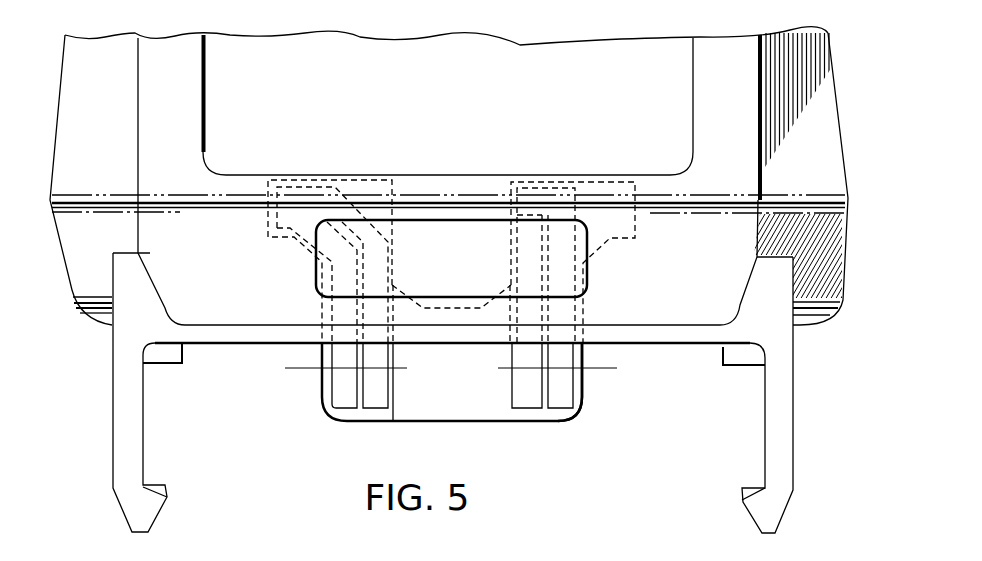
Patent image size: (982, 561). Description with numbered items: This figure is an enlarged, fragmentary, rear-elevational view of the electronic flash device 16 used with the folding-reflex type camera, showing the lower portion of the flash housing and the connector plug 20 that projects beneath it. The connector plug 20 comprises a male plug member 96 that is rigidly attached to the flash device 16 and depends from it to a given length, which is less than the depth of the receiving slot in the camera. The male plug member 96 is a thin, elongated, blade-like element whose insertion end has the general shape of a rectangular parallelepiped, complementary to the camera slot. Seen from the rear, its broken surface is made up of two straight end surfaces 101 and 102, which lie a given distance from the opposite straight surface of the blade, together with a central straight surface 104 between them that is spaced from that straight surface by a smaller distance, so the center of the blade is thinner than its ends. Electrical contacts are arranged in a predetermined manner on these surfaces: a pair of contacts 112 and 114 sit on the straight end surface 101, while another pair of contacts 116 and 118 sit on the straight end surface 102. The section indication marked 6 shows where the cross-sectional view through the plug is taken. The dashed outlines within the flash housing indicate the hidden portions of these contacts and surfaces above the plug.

The electronic flash device 16 is at (852, 135).
The connector plug 20 is at (589, 395).
The male plug member 96 is at (565, 418).
The straight end surface 101 is at (323, 353).
The straight end surface 102 is at (585, 352).
The central straight surface 104 is at (447, 410).
The electrical contact 112 is at (342, 410).
The electrical contact 114 is at (378, 402).
The electrical contact 116 is at (530, 395).
The electrical contact 118 is at (533, 413).
The section line 6- 6 is at (293, 363).